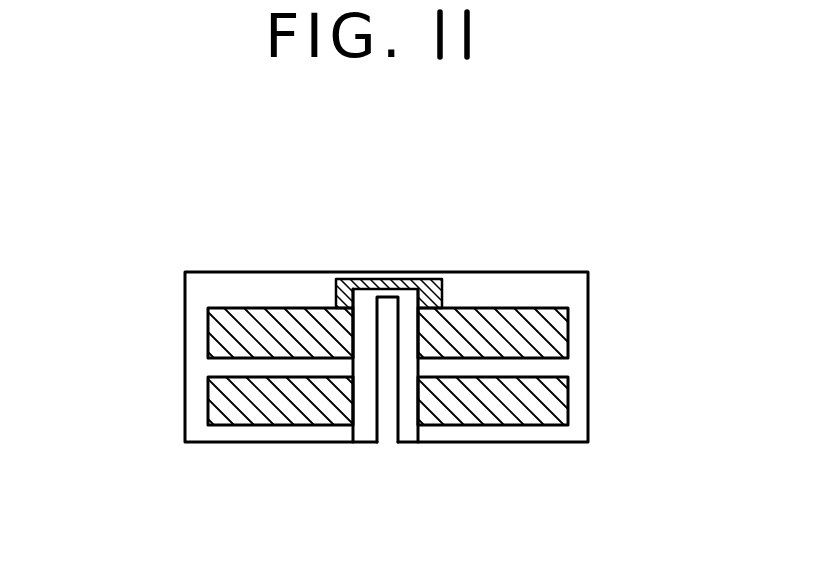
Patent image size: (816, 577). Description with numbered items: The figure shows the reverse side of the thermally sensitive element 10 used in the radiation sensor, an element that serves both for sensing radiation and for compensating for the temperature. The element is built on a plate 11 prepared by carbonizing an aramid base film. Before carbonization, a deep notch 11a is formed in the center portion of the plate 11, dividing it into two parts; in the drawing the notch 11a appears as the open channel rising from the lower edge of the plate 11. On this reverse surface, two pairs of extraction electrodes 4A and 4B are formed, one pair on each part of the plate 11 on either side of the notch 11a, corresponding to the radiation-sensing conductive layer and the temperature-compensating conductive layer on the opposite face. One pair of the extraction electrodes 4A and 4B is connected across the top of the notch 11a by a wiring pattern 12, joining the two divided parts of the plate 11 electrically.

The thermally sensitive element 10 is at (167, 317).
The plate 11 is at (575, 292).
The notch 11a is at (385, 430).
The wiring pattern 12 is at (383, 282).
The extraction electrodes 4A is at (258, 315).
The extraction electrodes 4B is at (521, 320).